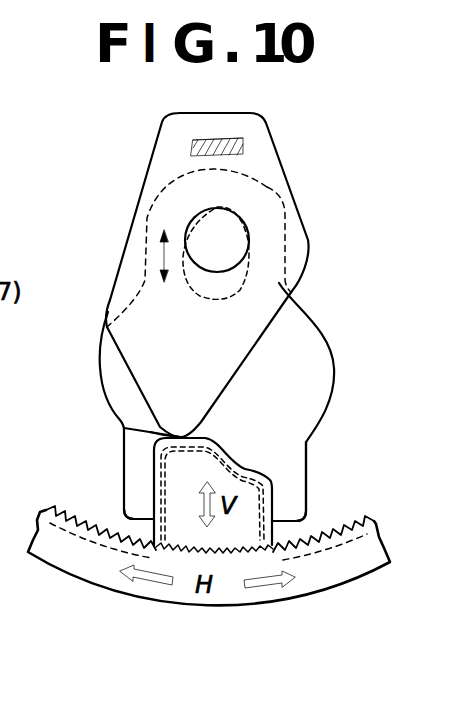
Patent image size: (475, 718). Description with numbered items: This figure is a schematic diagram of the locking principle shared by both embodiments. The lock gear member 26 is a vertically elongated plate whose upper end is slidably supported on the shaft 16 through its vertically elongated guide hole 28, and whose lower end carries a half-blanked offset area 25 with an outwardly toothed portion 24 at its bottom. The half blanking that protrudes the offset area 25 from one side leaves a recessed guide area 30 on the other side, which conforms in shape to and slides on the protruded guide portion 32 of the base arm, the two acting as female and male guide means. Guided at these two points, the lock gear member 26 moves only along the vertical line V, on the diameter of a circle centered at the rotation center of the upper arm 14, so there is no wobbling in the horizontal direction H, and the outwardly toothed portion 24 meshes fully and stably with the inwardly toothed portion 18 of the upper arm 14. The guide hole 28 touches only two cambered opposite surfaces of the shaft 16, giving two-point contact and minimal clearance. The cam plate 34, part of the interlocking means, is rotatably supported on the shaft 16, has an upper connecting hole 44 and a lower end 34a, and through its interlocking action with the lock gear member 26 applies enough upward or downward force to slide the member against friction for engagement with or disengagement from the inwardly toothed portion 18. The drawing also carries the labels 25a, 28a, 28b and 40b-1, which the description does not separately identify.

The upper arm 14 is at (95, 576).
The shaft 16 is at (240, 230).
The inwardly toothed portion 18 is at (90, 513).
The outwardly toothed portion 24 is at (223, 556).
The half-blanked offset area 25 is at (158, 442).
The head inner contour 25a is at (220, 430).
The lock gear member 26 is at (336, 367).
The vertically elongated guide hole 28 is at (252, 256).
The hidden member outer outline 28a is at (267, 187).
The hidden member inner outline 28b is at (230, 291).
The recessed guide area 30 is at (168, 488).
The protruded guide portion 32 is at (287, 480).
The cam plate 34 is at (126, 227).
The lower end 34a is at (124, 428).
The stop block position Z 40b-1 is at (243, 140).
The upper connecting hole 44 is at (188, 144).